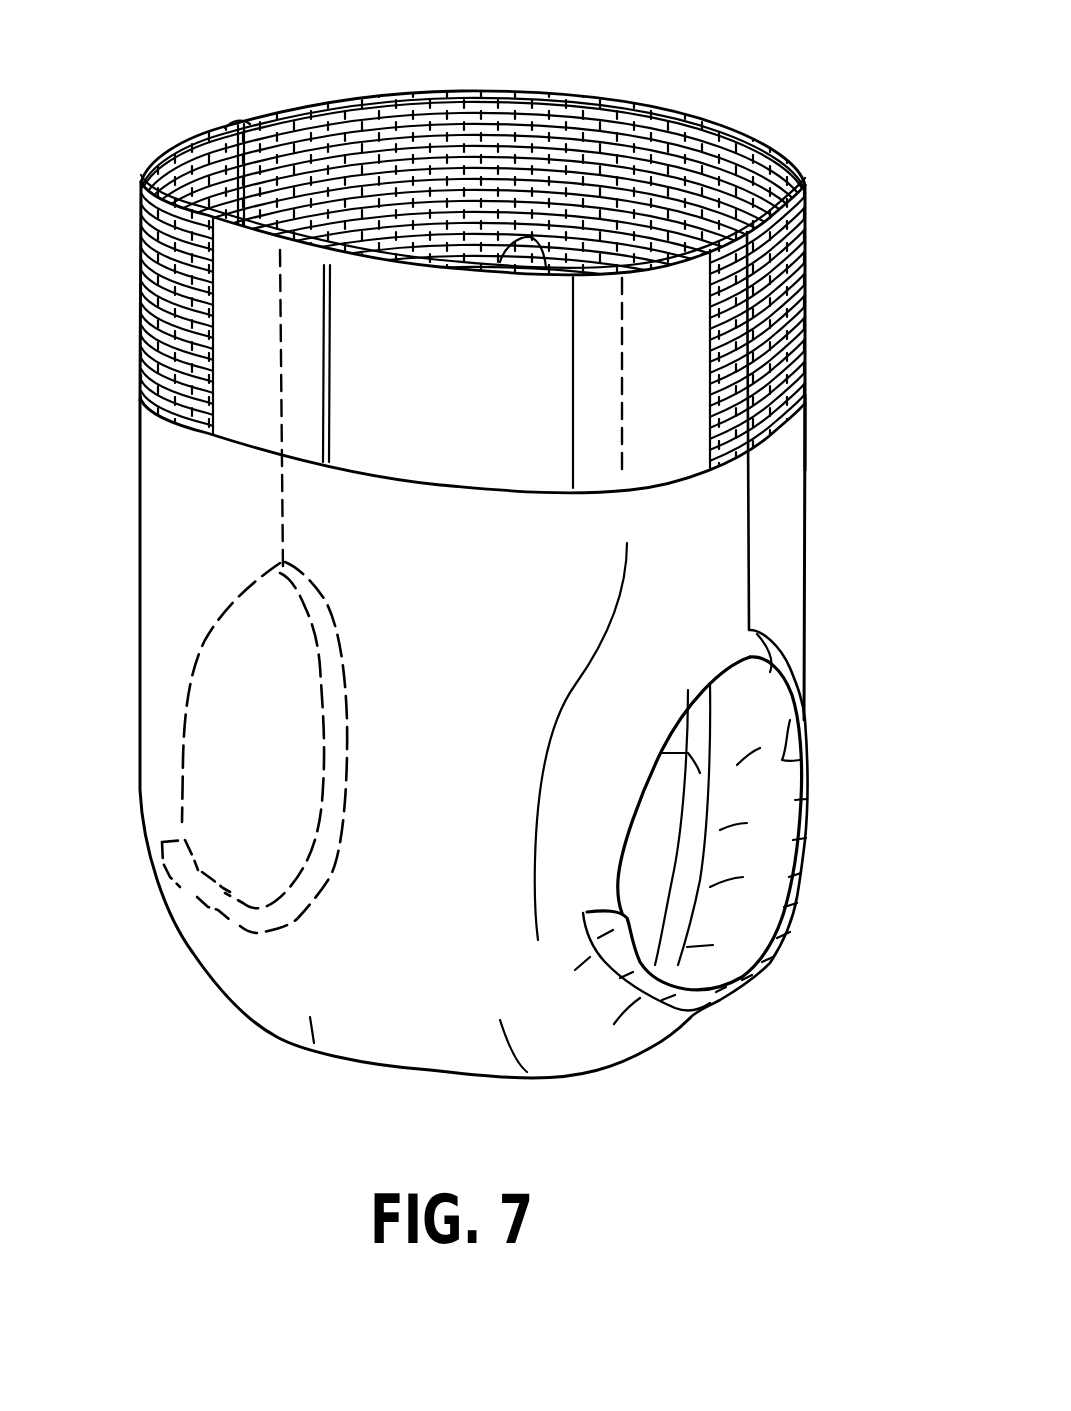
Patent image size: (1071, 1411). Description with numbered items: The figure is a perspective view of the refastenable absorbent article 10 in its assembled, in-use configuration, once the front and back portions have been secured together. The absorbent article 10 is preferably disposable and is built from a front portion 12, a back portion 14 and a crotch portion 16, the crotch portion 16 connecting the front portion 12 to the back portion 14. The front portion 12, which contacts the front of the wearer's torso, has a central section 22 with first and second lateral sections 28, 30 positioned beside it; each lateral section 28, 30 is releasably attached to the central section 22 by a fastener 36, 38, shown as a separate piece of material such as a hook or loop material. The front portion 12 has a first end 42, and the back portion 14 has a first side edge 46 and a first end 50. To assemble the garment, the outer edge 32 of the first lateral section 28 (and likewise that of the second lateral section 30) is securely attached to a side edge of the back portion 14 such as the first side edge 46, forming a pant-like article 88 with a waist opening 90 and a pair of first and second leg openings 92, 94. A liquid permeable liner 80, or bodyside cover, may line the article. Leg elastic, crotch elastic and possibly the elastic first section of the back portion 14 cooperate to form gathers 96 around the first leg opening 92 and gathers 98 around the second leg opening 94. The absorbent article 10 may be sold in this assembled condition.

The refastenable absorbent article 10 is at (828, 68).
The front portion 12 is at (150, 258).
The back portion 14 is at (640, 92).
The crotch portion 16 is at (408, 1038).
The central section 22 is at (463, 432).
The first lateral section 28 is at (170, 375).
The second lateral section 30 is at (803, 405).
The outer edge 32 is at (235, 125).
The fastener 36 is at (313, 333).
The fastener 38 is at (593, 352).
The first end 42 is at (443, 272).
The first side edge 46 is at (240, 123).
The first end 50 is at (560, 92).
The liquid permeable liner 80 is at (446, 775).
The pant-like article 88 is at (808, 262).
The waist opening 90 is at (547, 278).
The first leg opening 92 is at (228, 892).
The second leg opening 94 is at (683, 943).
The gathers 96 is at (316, 905).
The gathers 98 is at (808, 875).